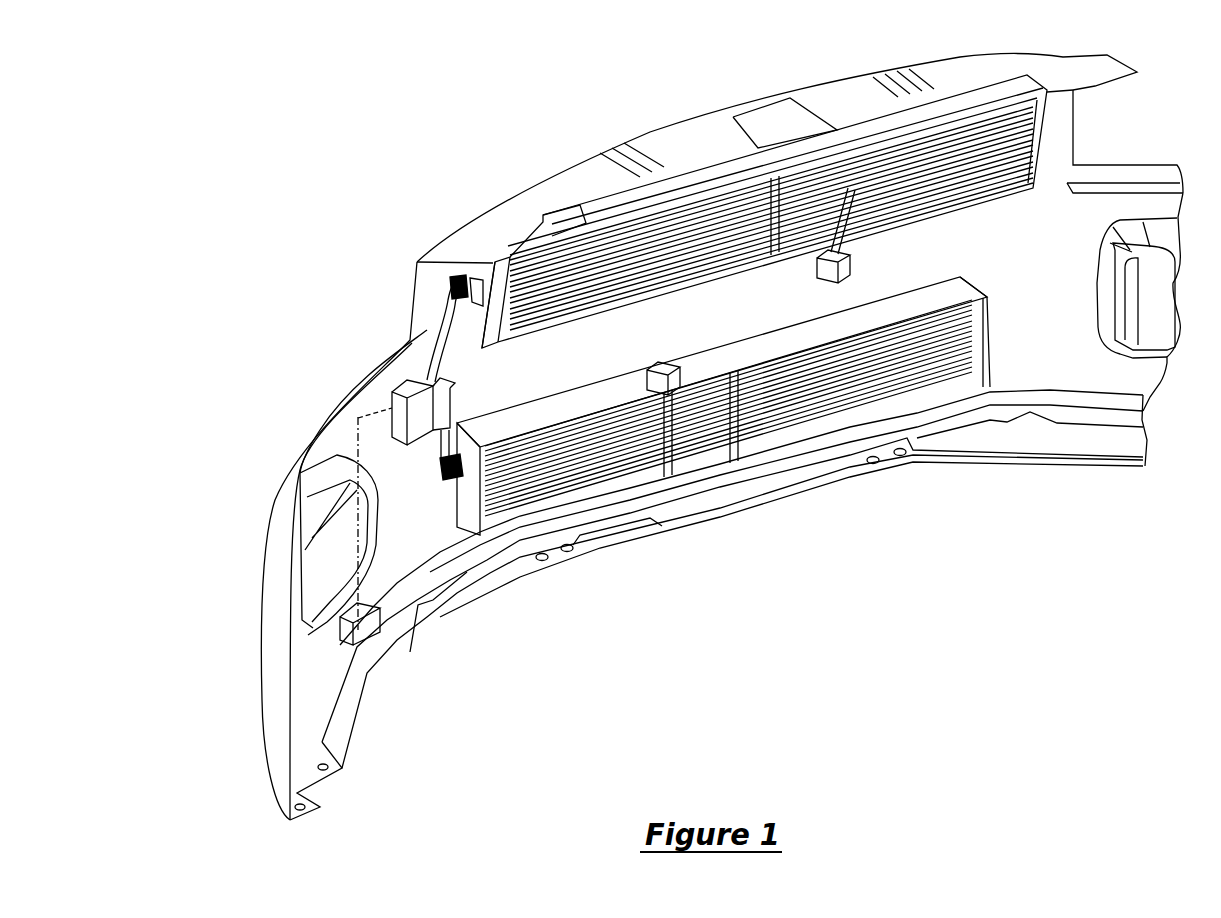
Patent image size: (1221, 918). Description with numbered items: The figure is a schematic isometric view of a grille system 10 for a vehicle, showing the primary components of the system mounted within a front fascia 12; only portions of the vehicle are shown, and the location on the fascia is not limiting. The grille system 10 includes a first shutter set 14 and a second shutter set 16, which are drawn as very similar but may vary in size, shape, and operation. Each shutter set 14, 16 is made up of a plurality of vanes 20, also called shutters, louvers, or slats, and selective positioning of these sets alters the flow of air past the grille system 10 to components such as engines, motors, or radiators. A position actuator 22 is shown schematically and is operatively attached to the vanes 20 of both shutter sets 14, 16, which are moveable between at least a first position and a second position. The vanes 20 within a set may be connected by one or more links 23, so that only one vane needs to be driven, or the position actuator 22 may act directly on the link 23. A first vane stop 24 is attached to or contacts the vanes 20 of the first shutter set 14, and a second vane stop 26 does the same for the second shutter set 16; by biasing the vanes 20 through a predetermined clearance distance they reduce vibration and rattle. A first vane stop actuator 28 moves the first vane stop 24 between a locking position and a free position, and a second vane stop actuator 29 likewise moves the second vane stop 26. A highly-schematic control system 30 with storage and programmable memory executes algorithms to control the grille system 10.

The grille system 10 is at (1103, 215).
The front fascia 12 is at (652, 150).
The first shutter set 14 is at (810, 341).
The second shutter set 16 is at (769, 425).
The vanes 20 is at (590, 300).
The position actuator 22 is at (407, 380).
The links 23 is at (505, 262).
The first vane stop 24 is at (852, 214).
The second vane stop 26 is at (668, 432).
The first vane stop actuator 28 is at (852, 265).
The second vane stop actuator 29 is at (665, 365).
The control system 30 is at (342, 620).